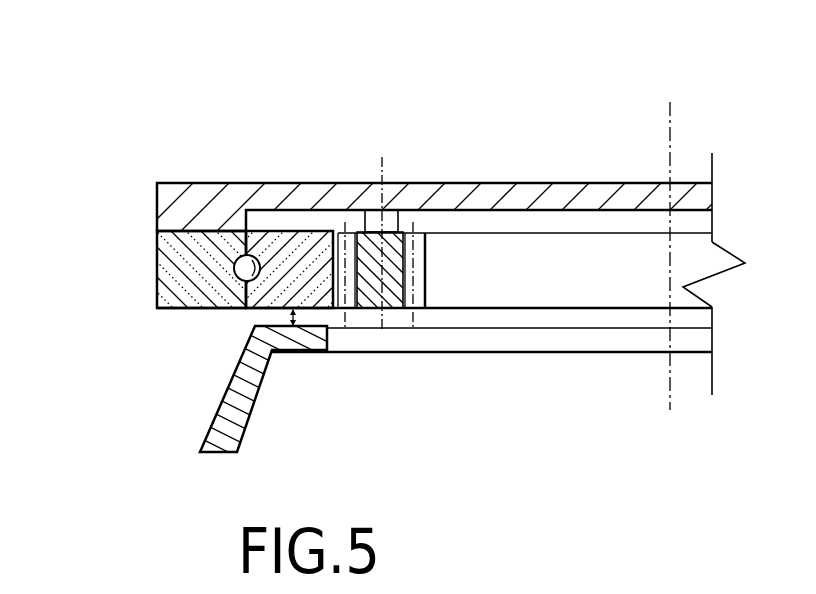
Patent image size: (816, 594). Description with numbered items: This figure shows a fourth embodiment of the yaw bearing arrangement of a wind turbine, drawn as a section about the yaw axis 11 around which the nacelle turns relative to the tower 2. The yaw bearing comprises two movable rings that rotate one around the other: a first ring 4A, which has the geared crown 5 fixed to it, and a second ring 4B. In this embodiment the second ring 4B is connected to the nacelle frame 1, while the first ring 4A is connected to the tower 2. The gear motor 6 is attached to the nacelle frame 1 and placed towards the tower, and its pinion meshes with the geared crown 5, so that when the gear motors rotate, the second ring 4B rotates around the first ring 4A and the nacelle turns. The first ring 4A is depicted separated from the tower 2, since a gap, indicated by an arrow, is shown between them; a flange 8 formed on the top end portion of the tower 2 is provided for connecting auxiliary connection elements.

The nacelle frame 1 is at (183, 190).
The tower 2 is at (235, 407).
The first ring 4A is at (297, 263).
The second ring 4B is at (168, 265).
The geared crown 5 is at (341, 235).
The gear motor 6 is at (388, 250).
The flange 8 is at (307, 338).
The yaw axis 11 is at (670, 119).